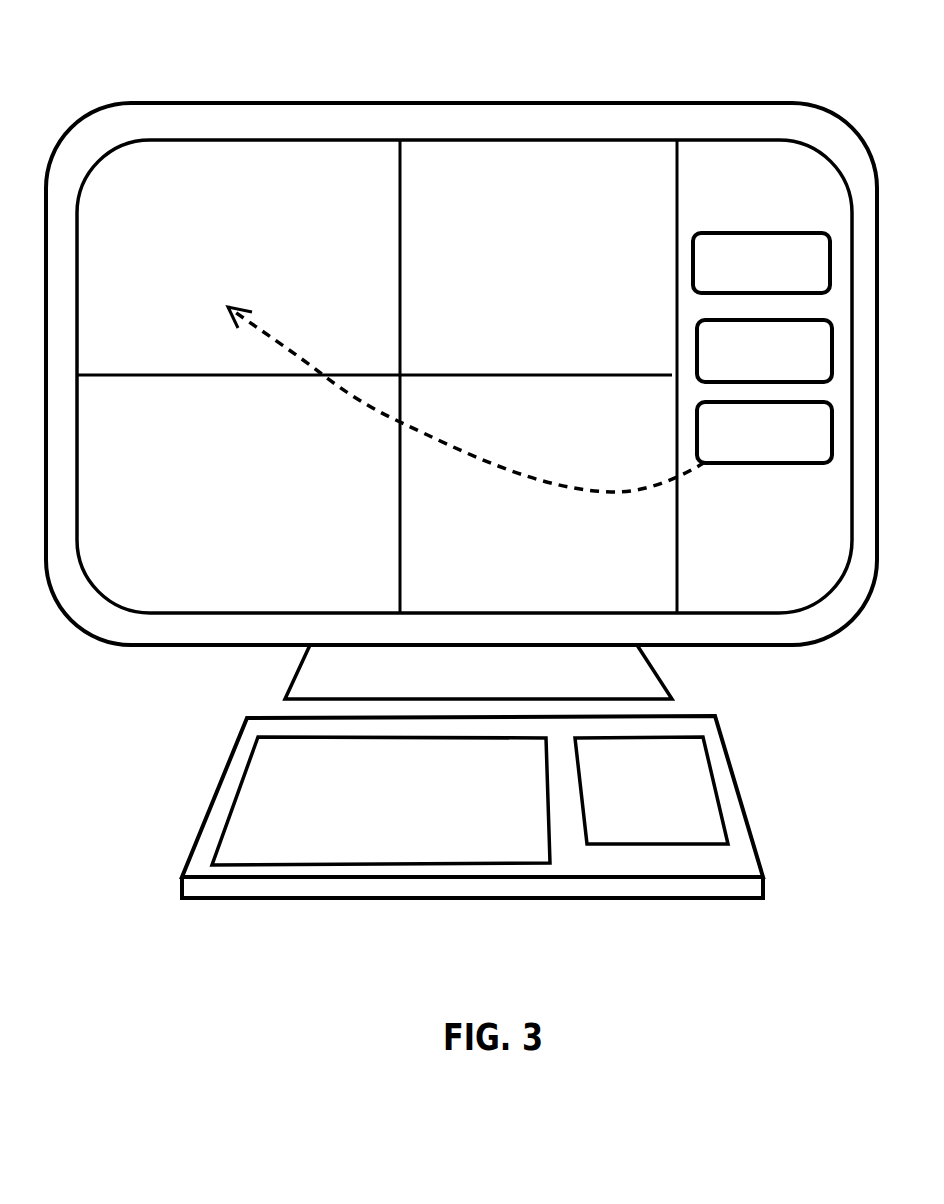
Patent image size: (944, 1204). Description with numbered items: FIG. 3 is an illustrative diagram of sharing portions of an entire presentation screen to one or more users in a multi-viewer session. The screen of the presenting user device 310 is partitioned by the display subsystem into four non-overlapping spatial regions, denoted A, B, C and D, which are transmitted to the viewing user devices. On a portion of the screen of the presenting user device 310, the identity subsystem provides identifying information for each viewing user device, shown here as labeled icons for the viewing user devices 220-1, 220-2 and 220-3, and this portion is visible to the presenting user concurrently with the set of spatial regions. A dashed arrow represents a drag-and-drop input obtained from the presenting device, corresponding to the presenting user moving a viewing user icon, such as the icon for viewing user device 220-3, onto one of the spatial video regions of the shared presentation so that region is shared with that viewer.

The presenting user device 310 is at (518, 102).
The viewing user device 220-1 is at (761, 263).
The viewing user device 220-2 is at (764, 351).
The viewing user device 220-3 is at (764, 432).